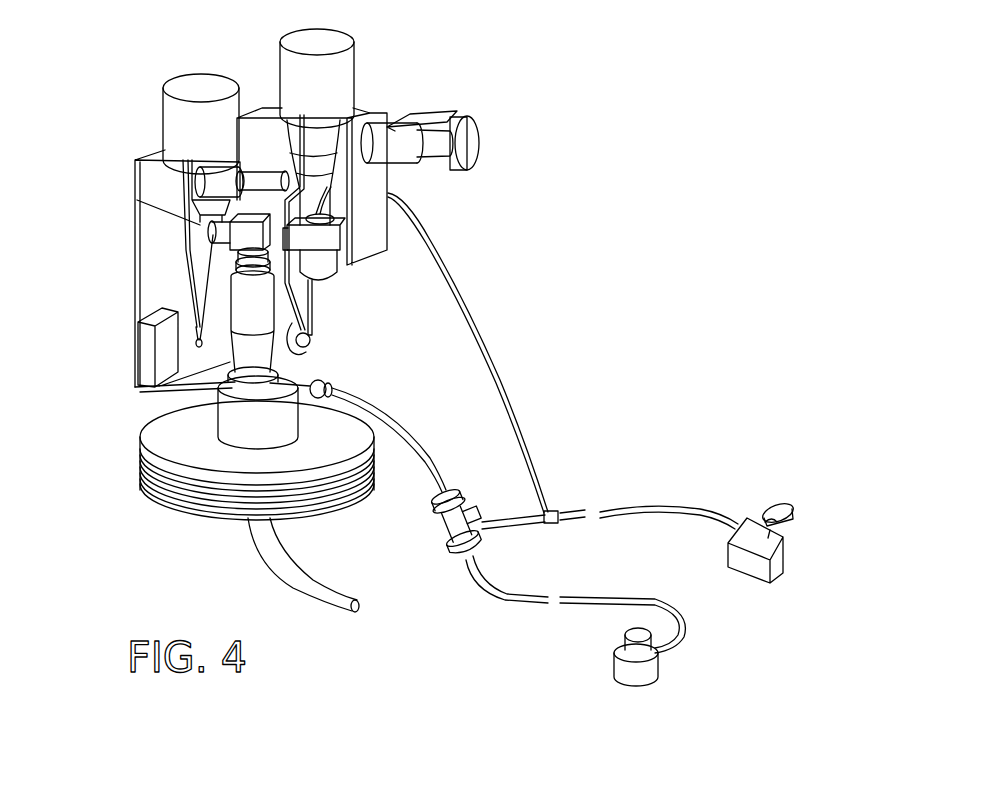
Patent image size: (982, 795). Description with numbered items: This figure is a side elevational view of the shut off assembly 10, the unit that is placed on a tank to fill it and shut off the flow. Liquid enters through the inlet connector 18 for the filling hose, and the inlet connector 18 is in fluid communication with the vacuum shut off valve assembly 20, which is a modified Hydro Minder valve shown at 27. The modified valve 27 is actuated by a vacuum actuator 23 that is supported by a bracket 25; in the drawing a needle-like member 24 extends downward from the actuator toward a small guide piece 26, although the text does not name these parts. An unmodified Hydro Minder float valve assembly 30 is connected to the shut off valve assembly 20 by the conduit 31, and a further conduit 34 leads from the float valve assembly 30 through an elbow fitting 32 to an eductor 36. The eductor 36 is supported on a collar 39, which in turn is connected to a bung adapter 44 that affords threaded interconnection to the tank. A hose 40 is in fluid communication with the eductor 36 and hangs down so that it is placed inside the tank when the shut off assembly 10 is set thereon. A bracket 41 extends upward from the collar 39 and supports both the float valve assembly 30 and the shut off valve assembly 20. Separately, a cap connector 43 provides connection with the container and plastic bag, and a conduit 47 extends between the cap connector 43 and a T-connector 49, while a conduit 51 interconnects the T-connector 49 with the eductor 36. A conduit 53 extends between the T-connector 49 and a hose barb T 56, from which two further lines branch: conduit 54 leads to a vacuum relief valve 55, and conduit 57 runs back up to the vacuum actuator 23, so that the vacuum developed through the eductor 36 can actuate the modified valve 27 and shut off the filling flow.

The shut off assembly 10 is at (150, 126).
The inlet connector 18 is at (468, 126).
The vacuum shut off valve assembly 20 is at (362, 67).
The vacuum actuator 23 is at (322, 270).
The needle 24 is at (313, 336).
The bracket 25 is at (325, 240).
The needle guide 26 is at (294, 344).
The modified Hydro Minder model 506 27 is at (328, 36).
The float valve assembly 30 is at (176, 68).
The conduit 31 is at (260, 178).
The elbow fitting 32 is at (205, 258).
The conduit 34 is at (193, 223).
The eductor 36 is at (247, 348).
The collar 39 is at (220, 420).
The hose 40 is at (268, 561).
The bracket 41 is at (136, 294).
The cap connector 43 is at (650, 670).
The bung adapter 44 is at (158, 470).
The conduit 47 is at (490, 592).
The T-connector 49 is at (452, 537).
The conduit 51 is at (406, 425).
The conduit 53 is at (517, 534).
The conduit 54 is at (652, 506).
The vacuum relief valve 55 is at (741, 564).
The hose barb T 56 is at (552, 510).
The conduit 57 is at (503, 371).